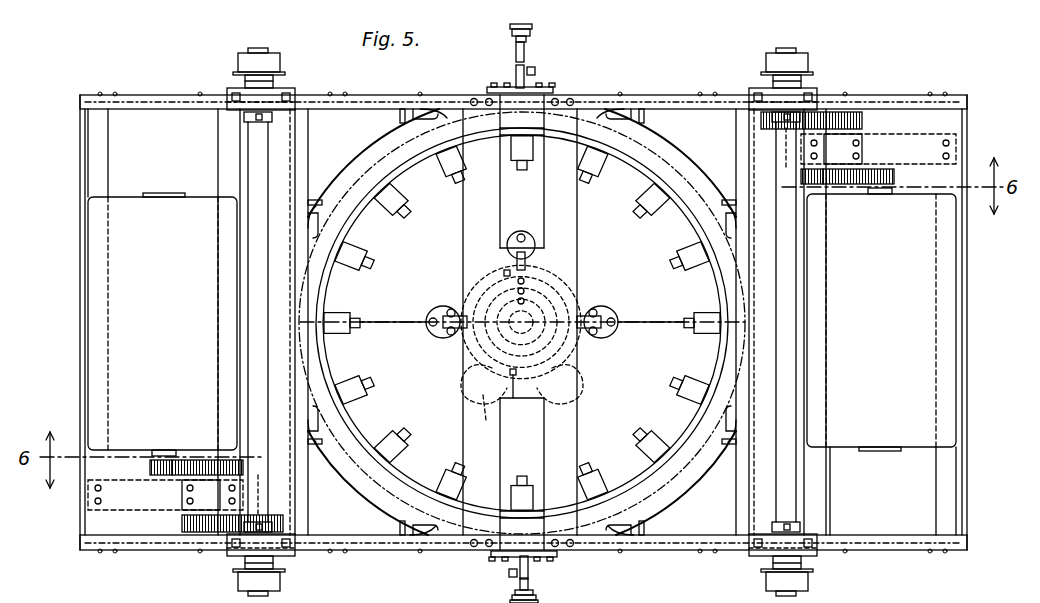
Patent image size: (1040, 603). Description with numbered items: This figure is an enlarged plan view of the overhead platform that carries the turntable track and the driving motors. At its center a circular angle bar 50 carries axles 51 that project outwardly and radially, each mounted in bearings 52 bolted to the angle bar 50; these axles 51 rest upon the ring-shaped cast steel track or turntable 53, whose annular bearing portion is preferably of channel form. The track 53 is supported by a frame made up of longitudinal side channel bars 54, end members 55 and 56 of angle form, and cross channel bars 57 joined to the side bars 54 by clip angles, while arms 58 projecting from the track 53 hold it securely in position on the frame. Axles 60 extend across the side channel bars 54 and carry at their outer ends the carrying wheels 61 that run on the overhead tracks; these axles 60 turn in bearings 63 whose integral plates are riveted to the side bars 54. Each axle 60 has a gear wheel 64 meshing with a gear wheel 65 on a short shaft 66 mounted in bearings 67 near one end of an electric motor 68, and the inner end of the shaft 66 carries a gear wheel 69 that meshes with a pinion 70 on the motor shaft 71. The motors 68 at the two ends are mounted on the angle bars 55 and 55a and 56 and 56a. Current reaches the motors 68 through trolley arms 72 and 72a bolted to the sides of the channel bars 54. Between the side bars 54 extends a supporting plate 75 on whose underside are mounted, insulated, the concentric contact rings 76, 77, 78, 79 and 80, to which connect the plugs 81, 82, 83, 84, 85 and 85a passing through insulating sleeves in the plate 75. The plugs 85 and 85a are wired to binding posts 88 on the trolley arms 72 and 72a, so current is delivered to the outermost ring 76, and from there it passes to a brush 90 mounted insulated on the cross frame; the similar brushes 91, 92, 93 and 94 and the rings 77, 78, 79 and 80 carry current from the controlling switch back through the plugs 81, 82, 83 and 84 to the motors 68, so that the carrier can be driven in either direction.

The circular angle bar 50 is at (630, 172).
The axles 51 is at (450, 184).
The bearings 52 is at (390, 212).
The track or turntable 53 is at (386, 163).
The longitudinal side channel bars 54 is at (170, 96).
The end member 55 is at (90, 172).
The angle bar 55a is at (222, 160).
The end member 56 is at (958, 488).
The angle bar 56a is at (822, 503).
The cross channel bars 57 is at (310, 503).
The arms 58 is at (325, 445).
The axles 60 is at (258, 280).
The carrying wheels 61 is at (270, 62).
The bearings 63 is at (270, 102).
The gear wheel 64 is at (276, 518).
The gear wheel 65 is at (182, 523).
The short shaft 66 is at (522, 321).
The bearings 67 is at (852, 155).
The electric motor 68 is at (522, 322).
The gear wheel 69 is at (196, 460).
The pinion 70 is at (150, 468).
The motor shaft 71 is at (164, 451).
The trolley arm 72 is at (536, 32).
The trolley arm 72a is at (538, 598).
The supporting plate 75 is at (570, 466).
The contact ring 76 is at (560, 355).
The contact ring 77 is at (555, 368).
The contact ring 78 is at (568, 340).
The contact ring 79 is at (566, 306).
The contact ring 80 is at (566, 292).
The plug 81 is at (524, 288).
The plug 82 is at (524, 298).
The plug 83 is at (516, 300).
The plug 84 is at (516, 283).
The plug 85 is at (508, 272).
The plug 85a is at (528, 396).
The binding post 88 is at (538, 74).
The brush 90 is at (530, 240).
The brush 91 is at (612, 314).
The brush 92 is at (570, 405).
The brush 93 is at (484, 393).
The brush 94 is at (436, 338).